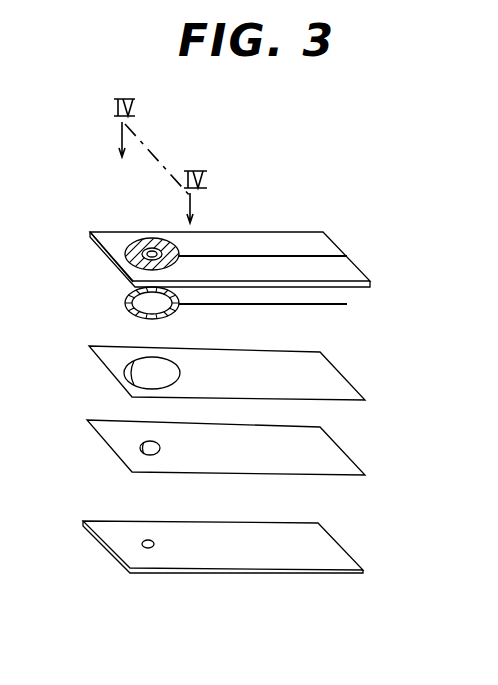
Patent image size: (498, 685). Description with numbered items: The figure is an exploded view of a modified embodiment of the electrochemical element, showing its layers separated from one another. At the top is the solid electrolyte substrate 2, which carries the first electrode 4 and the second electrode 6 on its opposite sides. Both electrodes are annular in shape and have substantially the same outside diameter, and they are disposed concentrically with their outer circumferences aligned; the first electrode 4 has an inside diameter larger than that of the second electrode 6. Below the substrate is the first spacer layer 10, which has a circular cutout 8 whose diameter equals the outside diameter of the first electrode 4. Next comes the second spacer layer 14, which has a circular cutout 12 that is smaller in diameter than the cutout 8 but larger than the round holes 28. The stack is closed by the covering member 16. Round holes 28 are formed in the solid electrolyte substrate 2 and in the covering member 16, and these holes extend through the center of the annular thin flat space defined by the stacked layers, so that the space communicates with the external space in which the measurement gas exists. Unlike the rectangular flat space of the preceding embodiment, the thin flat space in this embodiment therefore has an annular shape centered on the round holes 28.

The solid electrolyte substrate 2 is at (290, 240).
The first electrode 4 is at (131, 296).
The second electrode 6 is at (130, 245).
The circular cutout 8 is at (127, 372).
The first spacer layer 10 is at (337, 376).
The circular cutout 12 is at (140, 445).
The second spacer layer 14 is at (342, 461).
The covering member 16 is at (338, 558).
The round holes 28 is at (152, 251).